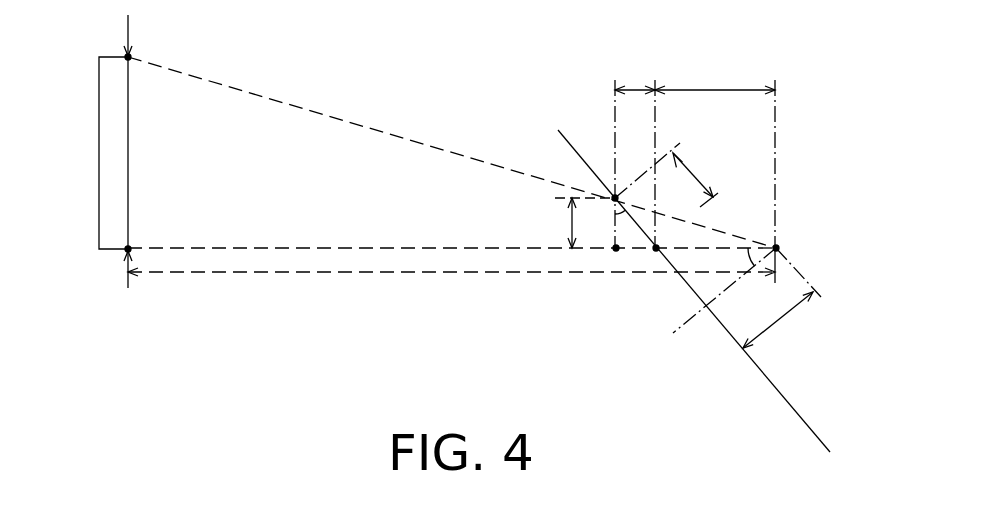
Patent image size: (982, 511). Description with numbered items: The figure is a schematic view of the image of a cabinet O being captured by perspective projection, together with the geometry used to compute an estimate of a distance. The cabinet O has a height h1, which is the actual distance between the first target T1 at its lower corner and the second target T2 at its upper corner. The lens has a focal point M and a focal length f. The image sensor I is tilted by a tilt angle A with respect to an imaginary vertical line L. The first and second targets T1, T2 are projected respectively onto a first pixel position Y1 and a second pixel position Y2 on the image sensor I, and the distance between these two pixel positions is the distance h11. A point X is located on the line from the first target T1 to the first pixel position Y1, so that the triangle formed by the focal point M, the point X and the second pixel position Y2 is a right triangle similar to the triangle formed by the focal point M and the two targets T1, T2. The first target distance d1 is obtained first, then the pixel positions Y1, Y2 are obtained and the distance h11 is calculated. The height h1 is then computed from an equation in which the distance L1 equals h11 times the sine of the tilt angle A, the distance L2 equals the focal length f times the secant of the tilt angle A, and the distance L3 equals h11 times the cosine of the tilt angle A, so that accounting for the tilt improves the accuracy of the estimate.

The cabinet O is at (99, 130).
The height h1 is at (149, 153).
The second target T2 is at (142, 37).
The first target T1 is at (142, 252).
The first target distance d1 is at (451, 284).
The imaginary vertical line L is at (615, 133).
The distance L1 is at (635, 76).
The distance L2 is at (715, 76).
The distance between the first and second pixel positions h11 is at (683, 175).
The distance L3 is at (574, 223).
The tilt angle A is at (685, 240).
The second pixel position Y2 is at (614, 203).
The point X is at (617, 252).
The first pixel position Y1 is at (656, 252).
The focal point M is at (777, 246).
The focal length f is at (778, 320).
The image sensor I is at (805, 417).